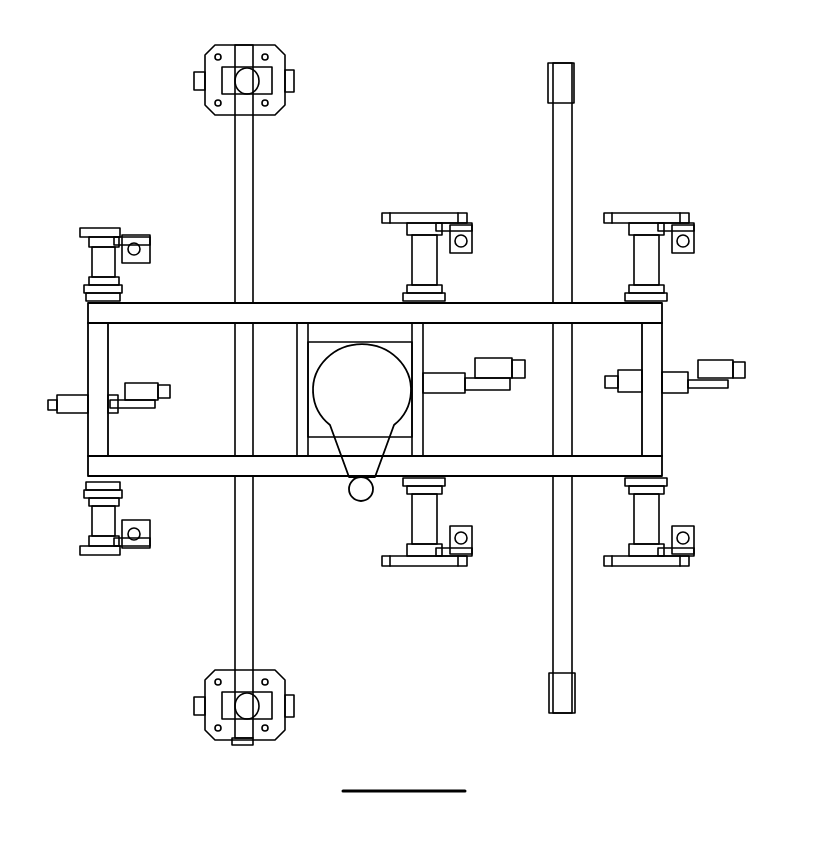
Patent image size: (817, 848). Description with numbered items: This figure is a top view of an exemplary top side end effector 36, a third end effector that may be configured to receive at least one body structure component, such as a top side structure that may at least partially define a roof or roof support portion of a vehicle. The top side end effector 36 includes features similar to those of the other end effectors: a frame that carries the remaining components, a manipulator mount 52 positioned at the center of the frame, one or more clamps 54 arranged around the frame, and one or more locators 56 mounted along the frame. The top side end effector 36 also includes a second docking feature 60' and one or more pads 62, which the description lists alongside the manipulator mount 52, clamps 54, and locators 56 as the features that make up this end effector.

The top side end effector 36 is at (697, 120).
The manipulator mount 52 is at (377, 397).
The clamp 54 is at (148, 235).
The locator 56 is at (160, 385).
The second docking feature 60' is at (285, 379).
The pad 62 is at (575, 80).